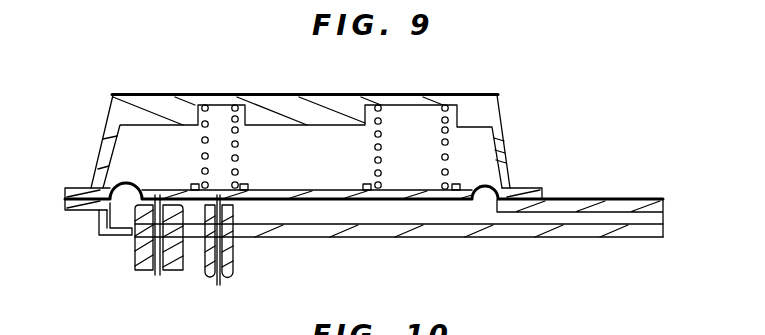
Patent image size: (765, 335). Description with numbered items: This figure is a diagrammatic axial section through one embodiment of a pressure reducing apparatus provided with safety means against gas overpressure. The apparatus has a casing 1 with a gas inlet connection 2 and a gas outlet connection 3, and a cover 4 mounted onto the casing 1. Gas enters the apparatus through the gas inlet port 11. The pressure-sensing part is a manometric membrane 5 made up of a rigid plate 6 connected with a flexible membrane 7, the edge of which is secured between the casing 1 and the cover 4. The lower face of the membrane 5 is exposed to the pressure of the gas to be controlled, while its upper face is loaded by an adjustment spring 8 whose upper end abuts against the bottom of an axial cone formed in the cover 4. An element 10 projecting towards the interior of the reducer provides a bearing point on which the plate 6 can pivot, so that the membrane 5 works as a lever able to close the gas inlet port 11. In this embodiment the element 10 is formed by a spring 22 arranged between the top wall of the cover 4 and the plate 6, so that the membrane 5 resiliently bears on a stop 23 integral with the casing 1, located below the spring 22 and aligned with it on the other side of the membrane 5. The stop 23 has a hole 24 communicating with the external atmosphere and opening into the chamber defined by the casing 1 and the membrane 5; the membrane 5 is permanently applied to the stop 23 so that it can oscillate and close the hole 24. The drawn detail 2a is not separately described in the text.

The casing 1 is at (496, 236).
The gas inlet connection 2 is at (171, 255).
The hook of connector clip 2a is at (135, 233).
The gas outlet connection 3 is at (609, 211).
The cover 4 is at (301, 118).
The manometric membrane 5 is at (333, 213).
The rigid plate 6 is at (308, 196).
The flexible membrane 7 is at (383, 191).
The adjustment spring 8 is at (447, 143).
The element 10 is at (247, 148).
The gas inlet port 11 is at (135, 241).
The spring 22 is at (204, 156).
The stop 23 is at (234, 213).
The hole 24 is at (218, 283).